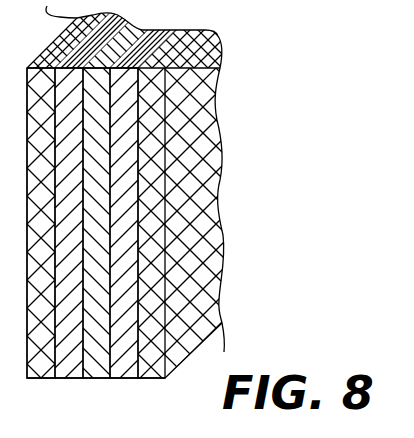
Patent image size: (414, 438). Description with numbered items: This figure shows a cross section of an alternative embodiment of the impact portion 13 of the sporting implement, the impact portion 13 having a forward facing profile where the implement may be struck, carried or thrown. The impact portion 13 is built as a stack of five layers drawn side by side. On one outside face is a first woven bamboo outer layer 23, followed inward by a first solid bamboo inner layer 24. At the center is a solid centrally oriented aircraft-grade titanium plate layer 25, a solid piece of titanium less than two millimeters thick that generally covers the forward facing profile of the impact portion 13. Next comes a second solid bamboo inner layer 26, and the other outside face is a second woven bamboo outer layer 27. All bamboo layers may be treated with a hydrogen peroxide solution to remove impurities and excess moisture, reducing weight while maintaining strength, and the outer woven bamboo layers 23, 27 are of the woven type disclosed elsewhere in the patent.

The impact portion 13 is at (240, 21).
The first woven bamboo outer layer 23 is at (222, 68).
The first solid bamboo inner layer 24 is at (80, 128).
The solid centrally oriented aircraft-grade titanium plate layer 25 is at (97, 173).
The second solid bamboo inner layer 26 is at (128, 224).
The second woven bamboo outer layer 27 is at (160, 257).